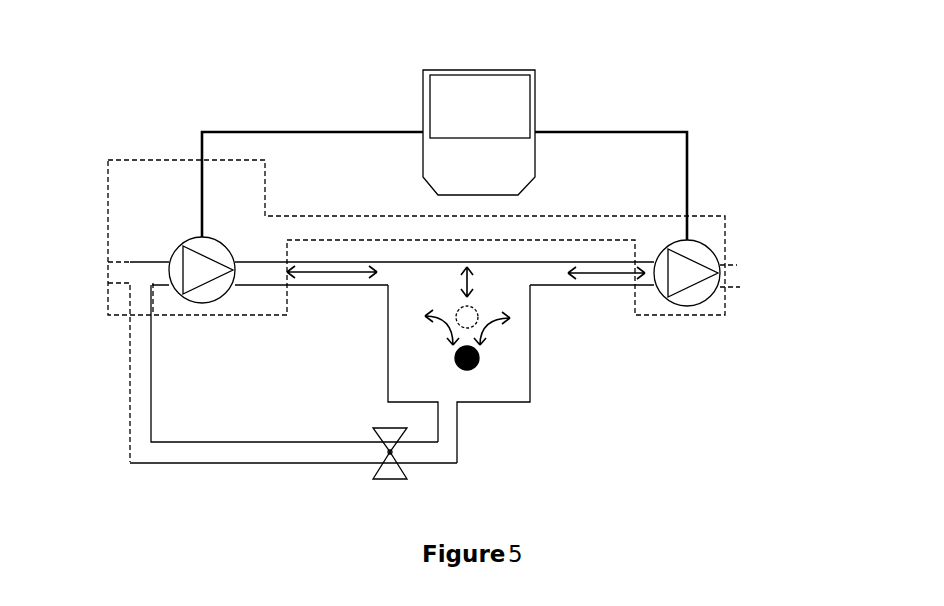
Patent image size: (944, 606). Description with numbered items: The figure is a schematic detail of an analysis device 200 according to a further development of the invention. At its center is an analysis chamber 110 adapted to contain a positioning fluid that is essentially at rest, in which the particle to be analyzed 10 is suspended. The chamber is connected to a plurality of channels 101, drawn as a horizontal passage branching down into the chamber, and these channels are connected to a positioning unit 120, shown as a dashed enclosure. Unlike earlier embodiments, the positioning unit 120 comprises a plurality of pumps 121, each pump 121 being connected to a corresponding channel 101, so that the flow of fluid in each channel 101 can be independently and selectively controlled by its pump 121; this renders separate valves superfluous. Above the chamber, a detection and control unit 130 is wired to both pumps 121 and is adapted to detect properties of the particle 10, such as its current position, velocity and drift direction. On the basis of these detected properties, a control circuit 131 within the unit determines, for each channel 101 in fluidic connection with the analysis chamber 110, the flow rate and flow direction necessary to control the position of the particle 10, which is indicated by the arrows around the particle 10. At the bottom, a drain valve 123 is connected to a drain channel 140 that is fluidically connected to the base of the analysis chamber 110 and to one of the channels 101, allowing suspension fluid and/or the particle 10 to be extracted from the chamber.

The analysis device 200 is at (708, 27).
The detection and control unit 130 is at (444, 138).
The control circuit 131 is at (527, 110).
The positioning unit 120 is at (718, 208).
The pump 121 is at (180, 243).
The channel 101 is at (347, 293).
The analysis chamber 110 is at (407, 382).
The particle to be analyzed 10 is at (482, 354).
The drain channel 140 is at (337, 463).
The drain valve 123 is at (400, 477).